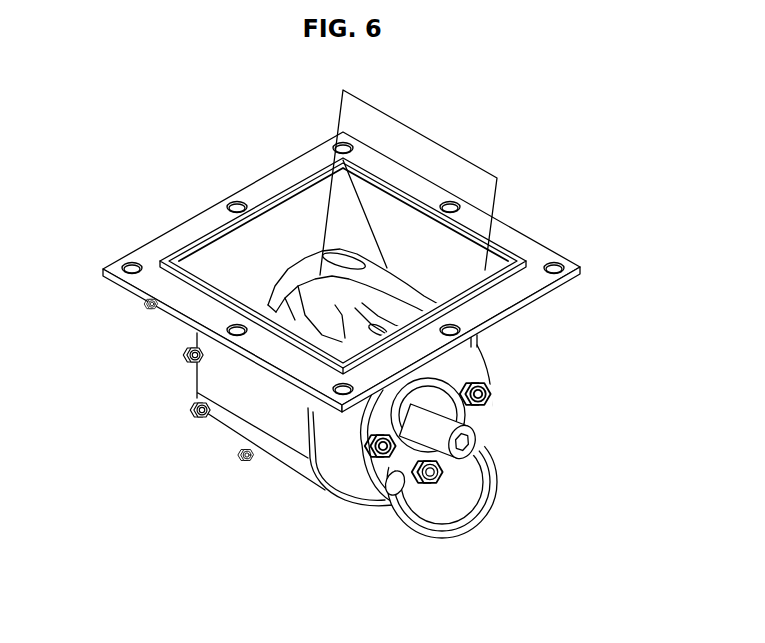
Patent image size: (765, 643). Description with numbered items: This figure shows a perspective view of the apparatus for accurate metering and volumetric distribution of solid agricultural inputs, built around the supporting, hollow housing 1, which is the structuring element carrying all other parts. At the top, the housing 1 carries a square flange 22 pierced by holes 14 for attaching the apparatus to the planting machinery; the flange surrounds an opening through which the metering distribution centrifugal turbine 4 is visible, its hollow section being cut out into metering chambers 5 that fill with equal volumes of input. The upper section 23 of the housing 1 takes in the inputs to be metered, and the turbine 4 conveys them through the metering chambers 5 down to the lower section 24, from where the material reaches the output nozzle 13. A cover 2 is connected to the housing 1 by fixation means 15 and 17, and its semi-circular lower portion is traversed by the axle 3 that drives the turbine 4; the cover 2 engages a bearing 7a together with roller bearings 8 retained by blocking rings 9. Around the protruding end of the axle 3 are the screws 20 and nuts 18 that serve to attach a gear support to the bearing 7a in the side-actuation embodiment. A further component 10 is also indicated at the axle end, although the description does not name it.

The supporting, hollow housing 1 is at (254, 398).
The cover 2 is at (264, 187).
The axle 3 is at (449, 420).
The metering distribution centrifugal turbine 4 is at (309, 262).
The metering chambers 5 is at (327, 262).
The bearing 7a is at (374, 475).
The roller bearings 8 is at (396, 496).
The blocking rings 9 is at (431, 483).
The shaft end 10 is at (468, 447).
The output nozzle 13 is at (483, 496).
The holes 14 is at (566, 266).
The fixation means 15 is at (194, 412).
The fixation means 17 is at (186, 357).
The nuts 18 is at (478, 503).
The screws 20 is at (438, 483).
The flange 22 is at (188, 306).
The upper section 23 is at (433, 142).
The lower section 24 is at (265, 443).